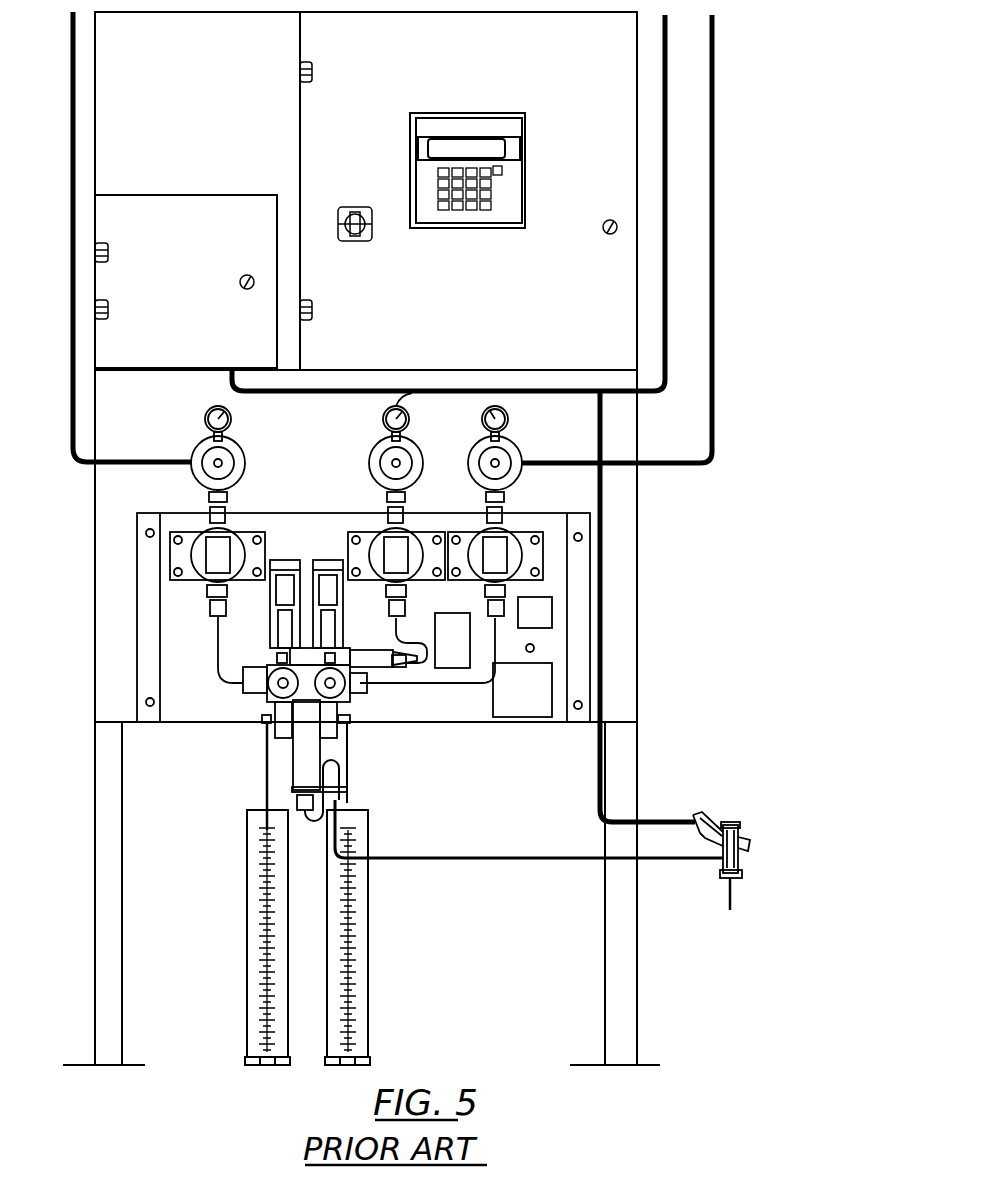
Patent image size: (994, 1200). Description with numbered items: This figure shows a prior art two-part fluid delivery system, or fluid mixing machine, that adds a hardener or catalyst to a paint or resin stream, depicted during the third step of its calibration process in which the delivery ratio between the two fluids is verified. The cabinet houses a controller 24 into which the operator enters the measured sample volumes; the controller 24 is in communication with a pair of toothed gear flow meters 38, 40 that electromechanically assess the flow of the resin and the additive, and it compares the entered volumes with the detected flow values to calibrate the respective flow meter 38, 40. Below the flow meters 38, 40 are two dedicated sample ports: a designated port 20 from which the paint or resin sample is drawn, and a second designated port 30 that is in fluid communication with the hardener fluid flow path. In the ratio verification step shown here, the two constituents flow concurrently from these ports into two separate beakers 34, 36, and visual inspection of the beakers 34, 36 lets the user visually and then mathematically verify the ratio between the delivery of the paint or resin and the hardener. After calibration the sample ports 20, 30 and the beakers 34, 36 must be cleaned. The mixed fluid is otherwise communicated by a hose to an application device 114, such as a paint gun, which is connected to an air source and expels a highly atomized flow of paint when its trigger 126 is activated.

The controller 24 is at (507, 175).
The toothed gear flow meter 38 is at (267, 695).
The toothed gear flow meter 40 is at (347, 700).
The designated port 20 is at (263, 718).
The second designated port 30 is at (350, 723).
The beaker 34 is at (260, 962).
The beaker 36 is at (355, 955).
The application device 114 is at (773, 828).
The trigger 126 is at (715, 845).